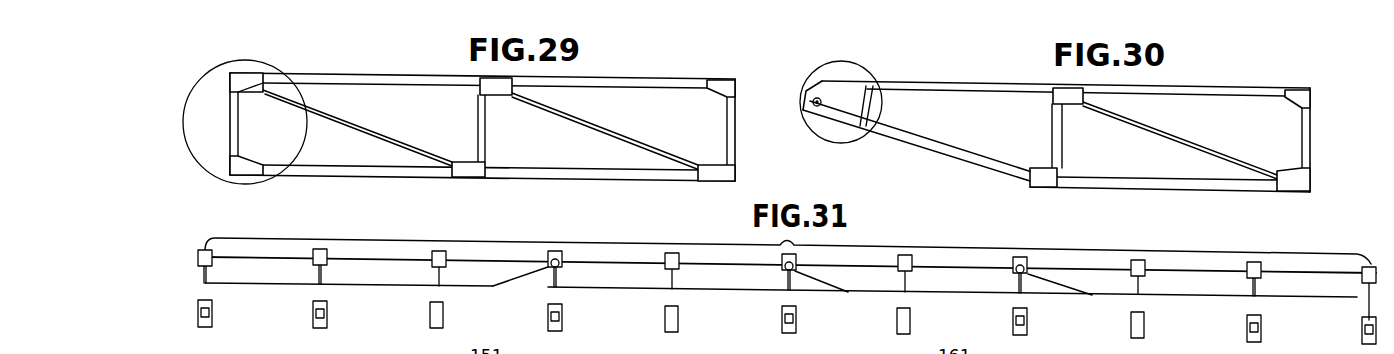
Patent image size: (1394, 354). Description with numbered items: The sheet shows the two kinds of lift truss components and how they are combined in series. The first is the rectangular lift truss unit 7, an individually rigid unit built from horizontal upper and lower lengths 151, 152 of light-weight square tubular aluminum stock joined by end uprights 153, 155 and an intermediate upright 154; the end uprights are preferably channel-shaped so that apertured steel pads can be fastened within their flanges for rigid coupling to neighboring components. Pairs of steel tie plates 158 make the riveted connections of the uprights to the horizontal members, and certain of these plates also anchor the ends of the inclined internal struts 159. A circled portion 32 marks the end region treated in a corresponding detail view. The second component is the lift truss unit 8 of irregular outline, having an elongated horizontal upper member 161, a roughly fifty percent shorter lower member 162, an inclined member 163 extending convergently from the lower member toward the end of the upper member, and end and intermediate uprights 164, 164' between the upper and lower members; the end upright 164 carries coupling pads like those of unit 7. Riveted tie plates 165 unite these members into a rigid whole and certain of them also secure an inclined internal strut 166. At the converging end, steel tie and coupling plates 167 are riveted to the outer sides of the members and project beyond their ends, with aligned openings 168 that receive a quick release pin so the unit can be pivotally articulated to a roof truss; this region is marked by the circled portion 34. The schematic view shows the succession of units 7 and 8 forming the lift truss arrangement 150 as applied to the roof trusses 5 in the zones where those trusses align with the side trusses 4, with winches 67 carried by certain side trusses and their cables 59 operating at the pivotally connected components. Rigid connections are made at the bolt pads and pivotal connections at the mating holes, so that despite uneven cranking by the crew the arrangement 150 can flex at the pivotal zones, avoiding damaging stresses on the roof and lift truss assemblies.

In FIG. 31, the side truss 4 is at (429, 318).
In FIG. 31, the roof truss 5 is at (203, 250).
In FIG. 29, the lift truss unit 7 is at (638, 80).
In FIG. 31, the lift truss unit 7 is at (280, 268).
In FIG. 30, the lift truss unit 8 is at (1193, 86).
In FIG. 31, the lift truss unit 8 is at (866, 278).
In FIG. 29, the circled detail portion 32 is at (216, 178).
In FIG. 30, the circled detail portion 34 is at (873, 85).
In FIG. 31, the cable 59 is at (553, 283).
In FIG. 31, the winch 67 is at (313, 318).
In FIG. 31, the lift truss arrangement 150 is at (743, 300).
In FIG. 29, the upper horizontal length 151 is at (388, 73).
In FIG. 29, the lower horizontal length 152 is at (578, 178).
In FIG. 29, the end upright 153 is at (236, 130).
In FIG. 29, the intermediate upright 154 is at (487, 138).
In FIG. 29, the end upright 155 is at (726, 112).
In FIG. 29, the tie plate 158 is at (240, 165).
In FIG. 29, the inclined internal strut 159 is at (397, 141).
In FIG. 30, the upper member 161 is at (1241, 90).
In FIG. 30, the lower member 162 is at (1250, 185).
In FIG. 30, the inclined member 163 is at (950, 148).
In FIG. 30, the end upright 164 is at (1333, 139).
In FIG. 30, the intermediate upright 164' is at (1031, 136).
In FIG. 30, the tie plate 165 is at (1077, 100).
In FIG. 30, the inclined internal strut 166 is at (1222, 153).
In FIG. 30, the tie and coupling plate 167 is at (843, 95).
In FIG. 30, the opening 168 is at (819, 108).